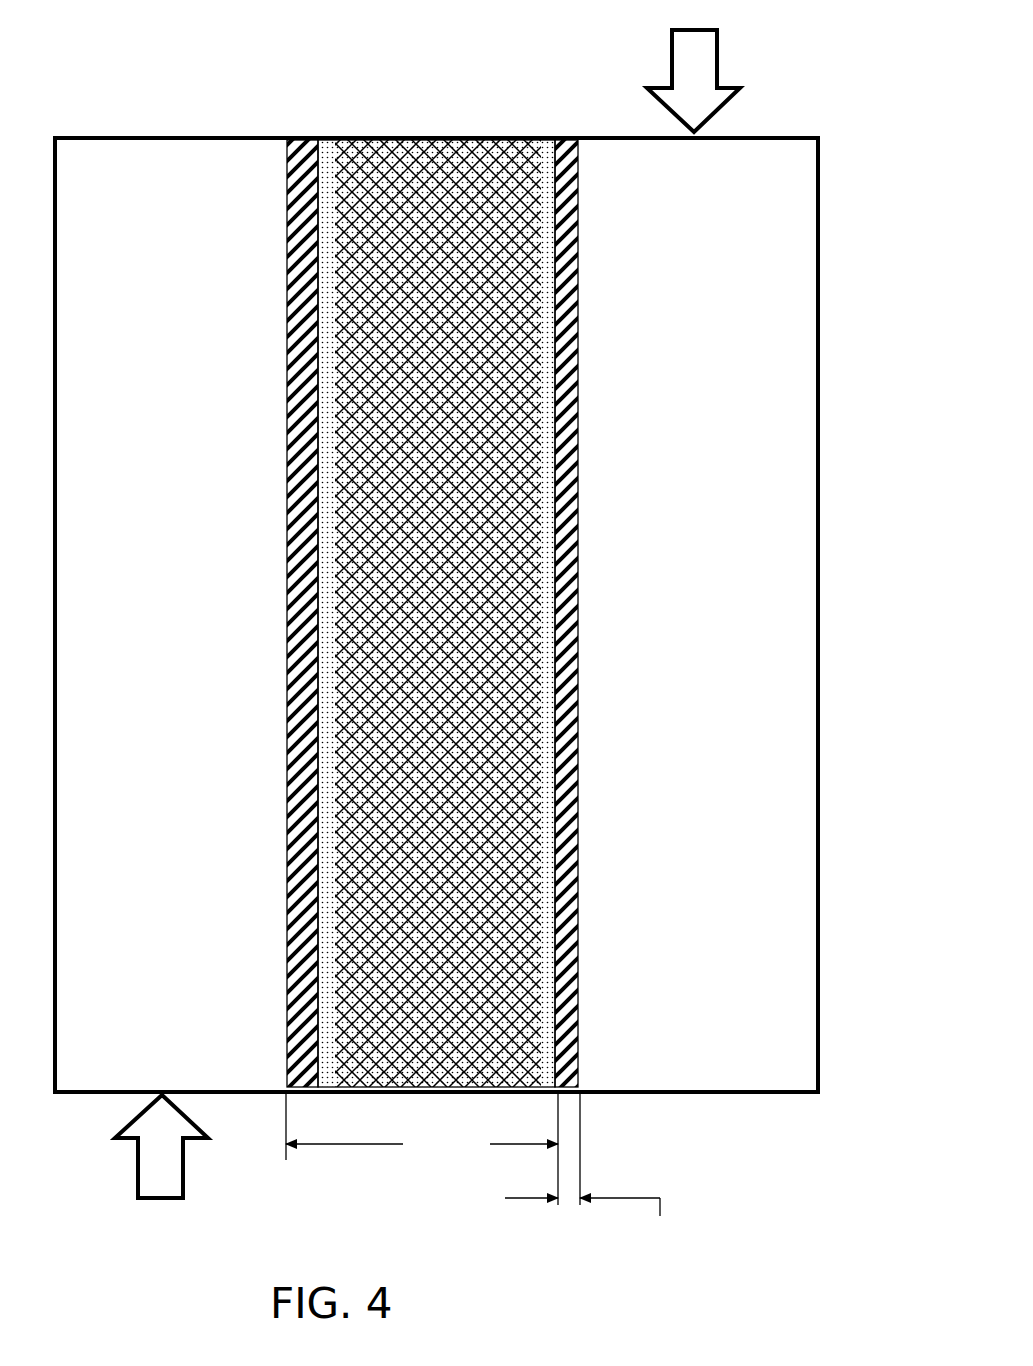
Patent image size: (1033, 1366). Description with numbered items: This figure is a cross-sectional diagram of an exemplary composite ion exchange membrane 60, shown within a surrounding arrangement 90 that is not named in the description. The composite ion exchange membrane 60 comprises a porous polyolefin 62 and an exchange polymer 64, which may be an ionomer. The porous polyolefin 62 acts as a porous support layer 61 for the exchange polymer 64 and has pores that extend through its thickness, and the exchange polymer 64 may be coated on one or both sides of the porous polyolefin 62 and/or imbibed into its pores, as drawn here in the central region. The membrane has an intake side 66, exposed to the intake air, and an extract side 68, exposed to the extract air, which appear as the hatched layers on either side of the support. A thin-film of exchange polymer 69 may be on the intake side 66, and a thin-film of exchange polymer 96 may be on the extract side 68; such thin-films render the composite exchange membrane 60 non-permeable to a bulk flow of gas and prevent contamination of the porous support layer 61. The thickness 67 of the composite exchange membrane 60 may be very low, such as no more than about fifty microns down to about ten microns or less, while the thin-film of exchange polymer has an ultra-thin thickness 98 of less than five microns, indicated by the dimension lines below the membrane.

The pressing assembly 90 is at (200, 110).
The composite ion exchange membrane 60 is at (436, 561).
The porous support layer 61 is at (515, 160).
The porous polyolefin 62 is at (440, 160).
The exchange polymer 64 is at (347, 158).
The intake side 66 is at (287, 292).
The extract side 68 is at (582, 297).
The thin-film of exchange polymer 69 is at (302, 427).
The thin-film of exchange polymer 96 is at (578, 424).
The thickness 67 is at (422, 1148).
The thickness 98 is at (588, 1178).